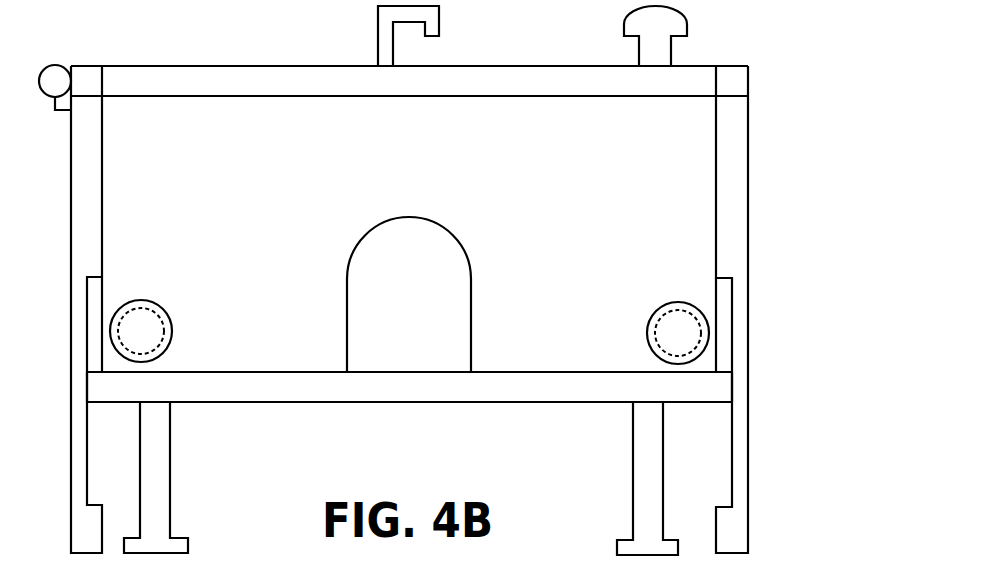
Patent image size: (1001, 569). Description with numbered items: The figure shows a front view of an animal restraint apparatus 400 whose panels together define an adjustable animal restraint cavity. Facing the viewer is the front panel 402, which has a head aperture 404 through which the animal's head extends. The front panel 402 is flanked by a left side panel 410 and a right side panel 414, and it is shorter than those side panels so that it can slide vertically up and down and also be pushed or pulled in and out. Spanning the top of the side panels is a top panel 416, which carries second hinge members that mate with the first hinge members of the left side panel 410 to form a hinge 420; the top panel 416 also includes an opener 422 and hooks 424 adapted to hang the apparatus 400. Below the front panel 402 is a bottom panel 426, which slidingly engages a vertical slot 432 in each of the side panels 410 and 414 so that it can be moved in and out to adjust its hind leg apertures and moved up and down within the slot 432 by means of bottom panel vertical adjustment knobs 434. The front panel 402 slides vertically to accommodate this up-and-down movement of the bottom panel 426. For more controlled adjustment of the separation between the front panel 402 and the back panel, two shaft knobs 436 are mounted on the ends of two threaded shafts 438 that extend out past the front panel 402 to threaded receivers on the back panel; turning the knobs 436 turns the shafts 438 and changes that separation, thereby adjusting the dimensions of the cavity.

The animal restraint apparatus 400 is at (784, 204).
The front panel 402 is at (608, 157).
The head aperture 404 is at (409, 294).
The left side panel 410 is at (86, 220).
The right side panel 414 is at (732, 250).
The top panel 416 is at (409, 81).
The hinge 420 is at (55, 64).
The opener 422 is at (672, 22).
The hook 424 is at (432, 23).
The bottom panel 426 is at (409, 387).
The vertical slot 432 is at (722, 327).
The bottom panel vertical adjustment knob 434 is at (155, 523).
The shaft knob 436 is at (173, 320).
The threaded shaft 438 is at (139, 330).